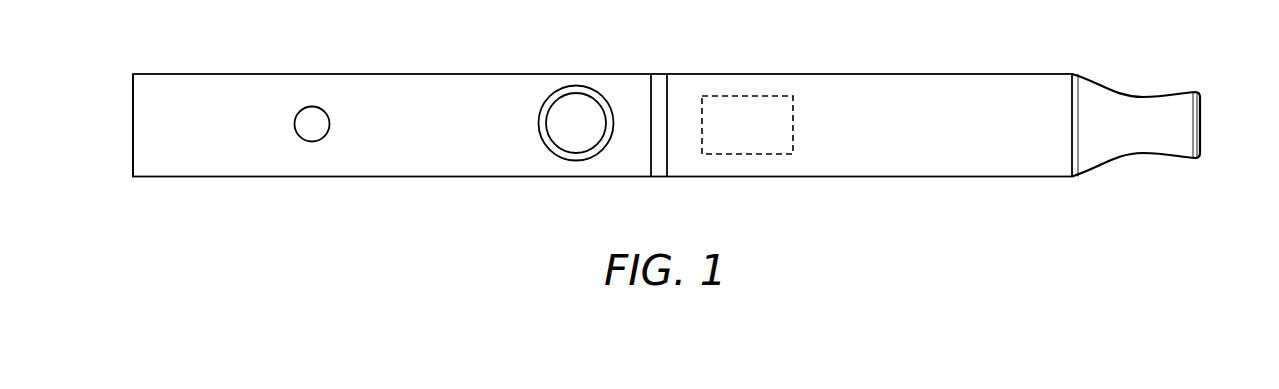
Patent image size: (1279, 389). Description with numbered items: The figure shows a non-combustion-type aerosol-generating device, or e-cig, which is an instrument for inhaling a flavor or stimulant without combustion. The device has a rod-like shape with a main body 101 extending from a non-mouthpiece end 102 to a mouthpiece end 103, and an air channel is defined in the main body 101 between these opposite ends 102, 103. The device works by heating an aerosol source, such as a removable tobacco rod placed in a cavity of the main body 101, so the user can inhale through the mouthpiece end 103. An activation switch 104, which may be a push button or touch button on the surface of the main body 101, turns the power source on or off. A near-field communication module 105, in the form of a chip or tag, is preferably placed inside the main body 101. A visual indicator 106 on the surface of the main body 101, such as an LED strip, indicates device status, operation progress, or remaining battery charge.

The main body 101 is at (412, 74).
The non-mouthpiece end 102 is at (133, 127).
The mouthpiece end 103 is at (1200, 125).
The activation switch 104 is at (577, 161).
The near-field communication module 105 is at (762, 154).
The visual indicator 106 is at (312, 142).